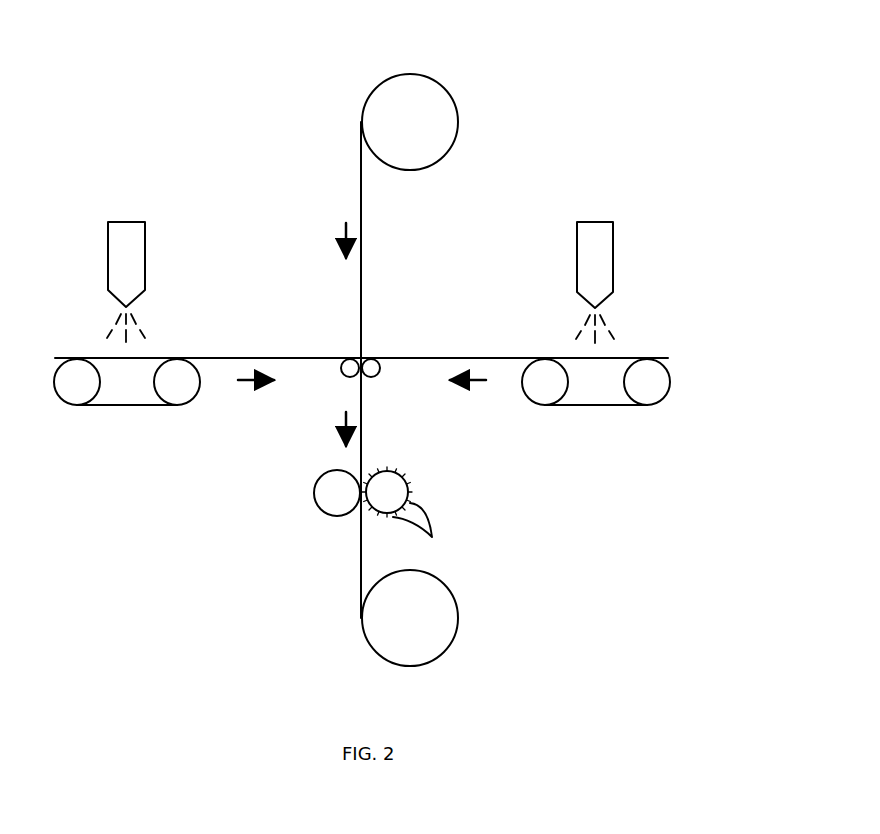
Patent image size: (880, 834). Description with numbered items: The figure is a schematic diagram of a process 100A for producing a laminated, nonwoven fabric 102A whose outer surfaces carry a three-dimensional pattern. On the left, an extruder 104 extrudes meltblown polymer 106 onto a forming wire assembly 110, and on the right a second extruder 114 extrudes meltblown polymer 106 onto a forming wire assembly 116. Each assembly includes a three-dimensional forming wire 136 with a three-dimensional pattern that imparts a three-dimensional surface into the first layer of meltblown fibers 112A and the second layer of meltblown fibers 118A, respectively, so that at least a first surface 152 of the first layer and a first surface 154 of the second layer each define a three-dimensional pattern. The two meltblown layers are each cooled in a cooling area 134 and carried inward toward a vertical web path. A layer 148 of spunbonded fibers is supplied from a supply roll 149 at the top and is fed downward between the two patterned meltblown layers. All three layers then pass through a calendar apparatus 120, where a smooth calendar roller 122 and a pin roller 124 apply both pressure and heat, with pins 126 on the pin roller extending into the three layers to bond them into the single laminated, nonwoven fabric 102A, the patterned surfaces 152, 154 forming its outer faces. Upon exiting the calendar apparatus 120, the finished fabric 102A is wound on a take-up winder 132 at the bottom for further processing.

The process 100A is at (650, 114).
The laminated, nonwoven fabric 102A is at (361, 558).
The extruder 104 is at (157, 260).
The meltblown polymer 106 is at (91, 326).
The forming wire assembly 110 is at (108, 421).
The first layer of meltblown fibers 112A is at (208, 357).
The extruder 114 is at (563, 241).
The forming wire assembly 116 is at (583, 420).
The second layer of meltblown fibers 118A is at (500, 357).
The calendar apparatus 120 is at (351, 488).
The smooth calendar roller 122 is at (322, 474).
The pin roller 124 is at (408, 473).
The pins 126 is at (433, 531).
The take-up winder 132 is at (458, 618).
The cooling area 134 is at (289, 347).
The 3D forming wires 136 is at (126, 406).
The layer of spunbonded fibers 148 is at (362, 241).
The supply roll 149 is at (409, 73).
The first surface of the first layer 152 is at (318, 358).
The first surface of the second layer 154 is at (410, 358).